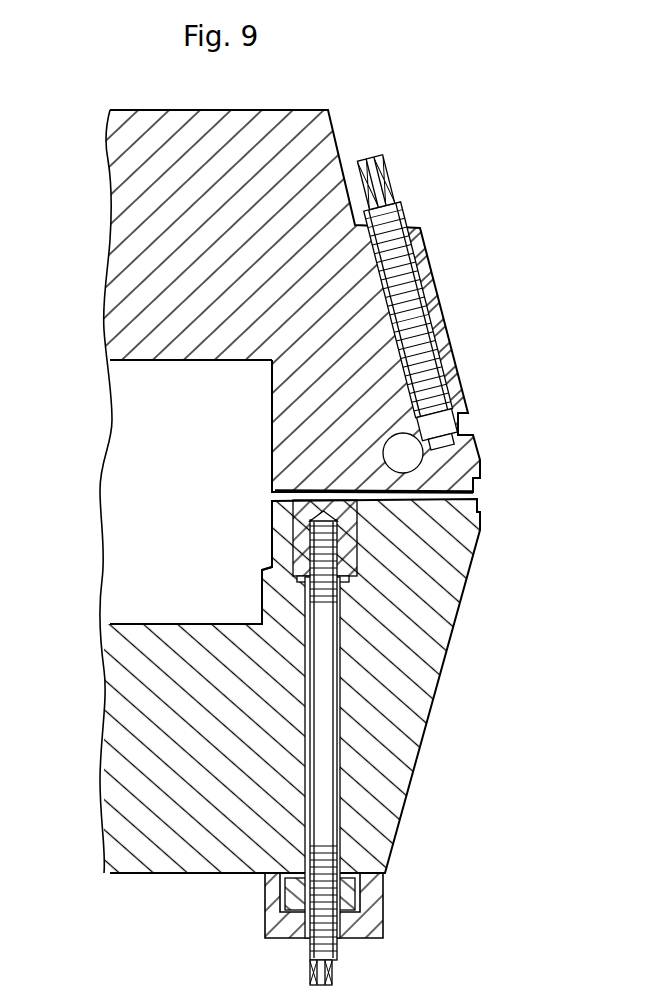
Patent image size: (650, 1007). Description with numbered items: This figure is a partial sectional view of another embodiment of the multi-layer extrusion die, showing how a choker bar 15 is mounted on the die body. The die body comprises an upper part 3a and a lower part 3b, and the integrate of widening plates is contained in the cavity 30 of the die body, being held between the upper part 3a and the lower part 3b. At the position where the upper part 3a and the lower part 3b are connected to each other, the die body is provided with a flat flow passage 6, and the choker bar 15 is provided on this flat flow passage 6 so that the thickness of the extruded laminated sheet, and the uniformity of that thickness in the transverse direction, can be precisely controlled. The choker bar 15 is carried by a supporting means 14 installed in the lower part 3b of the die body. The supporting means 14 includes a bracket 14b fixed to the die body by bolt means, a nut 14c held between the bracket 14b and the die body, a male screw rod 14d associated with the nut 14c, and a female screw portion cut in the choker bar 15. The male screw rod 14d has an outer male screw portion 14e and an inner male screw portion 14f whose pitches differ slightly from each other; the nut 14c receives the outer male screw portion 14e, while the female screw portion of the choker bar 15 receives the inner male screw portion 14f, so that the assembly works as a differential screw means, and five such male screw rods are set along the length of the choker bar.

The upper part 3a is at (322, 152).
The lower part 3b is at (398, 753).
The cavity 30 is at (160, 480).
The flat flow passage 6 is at (420, 452).
The choker bar 15 is at (342, 515).
The supporting means 14 is at (401, 748).
The bracket 14b is at (362, 923).
The nut 14c is at (345, 890).
The male screw rod 14d is at (325, 687).
The outer male screw portion 14e is at (325, 950).
The inner male screw portion 14f is at (337, 560).